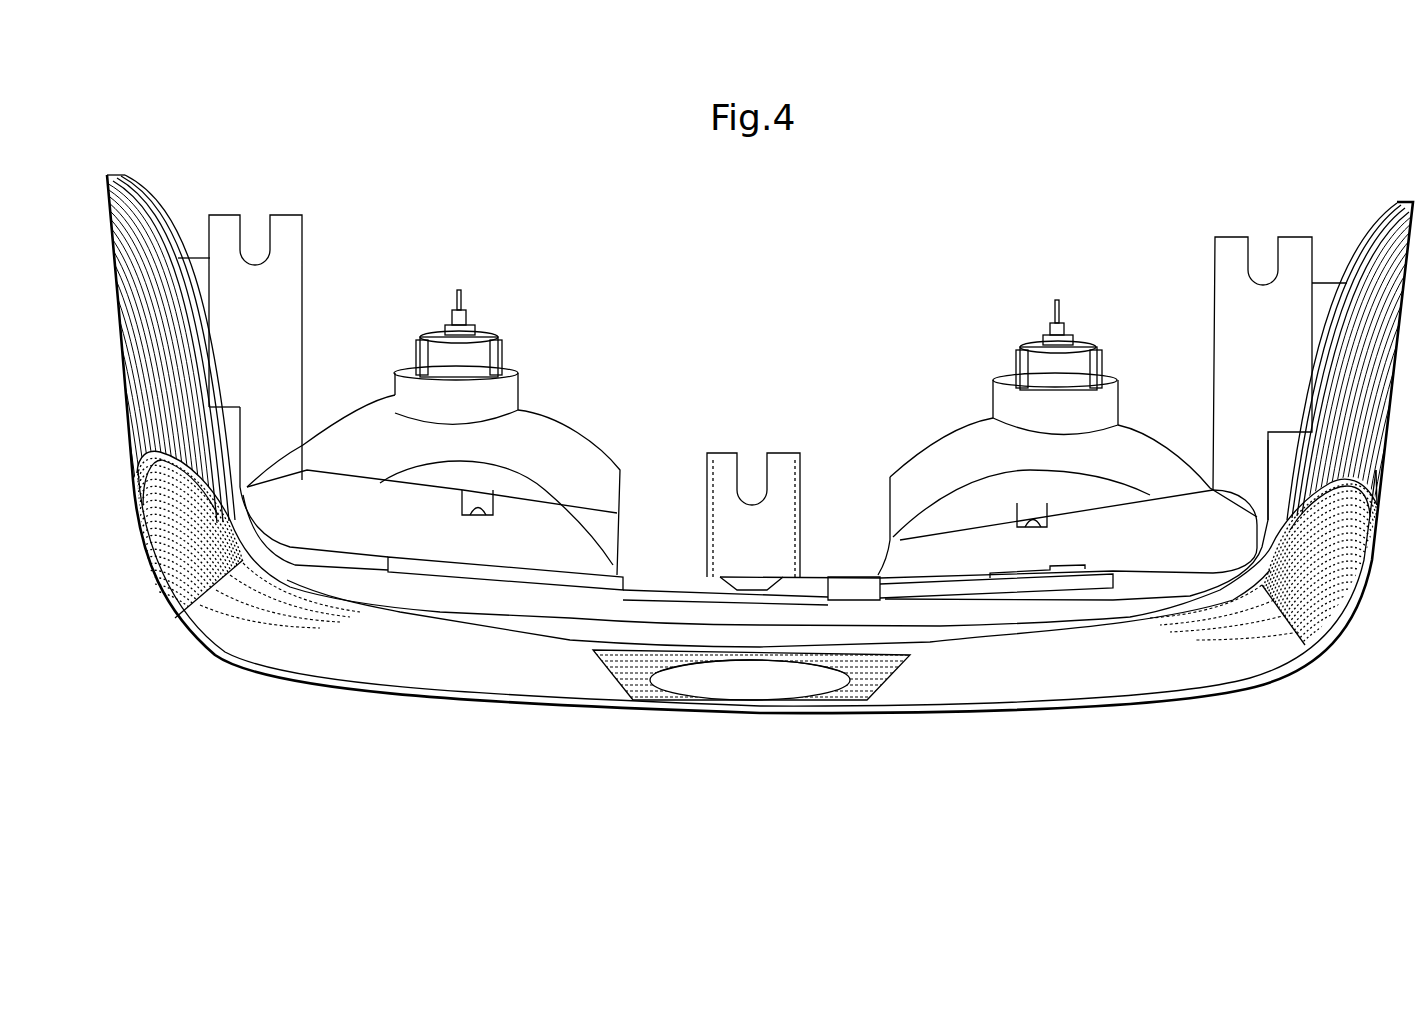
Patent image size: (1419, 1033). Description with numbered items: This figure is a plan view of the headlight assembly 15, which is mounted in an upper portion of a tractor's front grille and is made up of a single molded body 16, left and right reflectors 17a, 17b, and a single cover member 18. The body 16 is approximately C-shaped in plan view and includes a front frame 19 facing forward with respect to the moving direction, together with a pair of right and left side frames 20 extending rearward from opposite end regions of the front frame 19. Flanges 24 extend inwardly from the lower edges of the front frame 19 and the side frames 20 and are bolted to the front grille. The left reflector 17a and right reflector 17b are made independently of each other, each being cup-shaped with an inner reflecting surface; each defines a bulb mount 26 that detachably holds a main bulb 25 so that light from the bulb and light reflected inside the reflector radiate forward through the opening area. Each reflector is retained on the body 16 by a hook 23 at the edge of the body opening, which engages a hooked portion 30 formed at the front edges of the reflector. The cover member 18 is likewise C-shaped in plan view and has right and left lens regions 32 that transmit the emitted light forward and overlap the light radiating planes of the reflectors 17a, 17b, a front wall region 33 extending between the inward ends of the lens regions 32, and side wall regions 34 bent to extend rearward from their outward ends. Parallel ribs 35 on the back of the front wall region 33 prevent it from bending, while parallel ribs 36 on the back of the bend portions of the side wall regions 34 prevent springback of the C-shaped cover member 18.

The headlight assembly 15 is at (326, 742).
The body 16 is at (928, 640).
The left reflector 17a is at (553, 437).
The right reflector 17b is at (943, 447).
The cover member 18 is at (1196, 690).
The front frame 19 is at (827, 577).
The side frames 20 is at (145, 205).
The hook 23 is at (460, 497).
The flanges 24 is at (293, 308).
The main bulb 25 is at (480, 353).
The bulb mount 26 is at (403, 388).
The hooked portion 30 is at (477, 512).
The lens regions 32 is at (469, 680).
The front wall region 33 is at (683, 697).
The side wall regions 34 is at (147, 523).
The ribs 35 is at (850, 705).
The ribs 36 is at (185, 632).